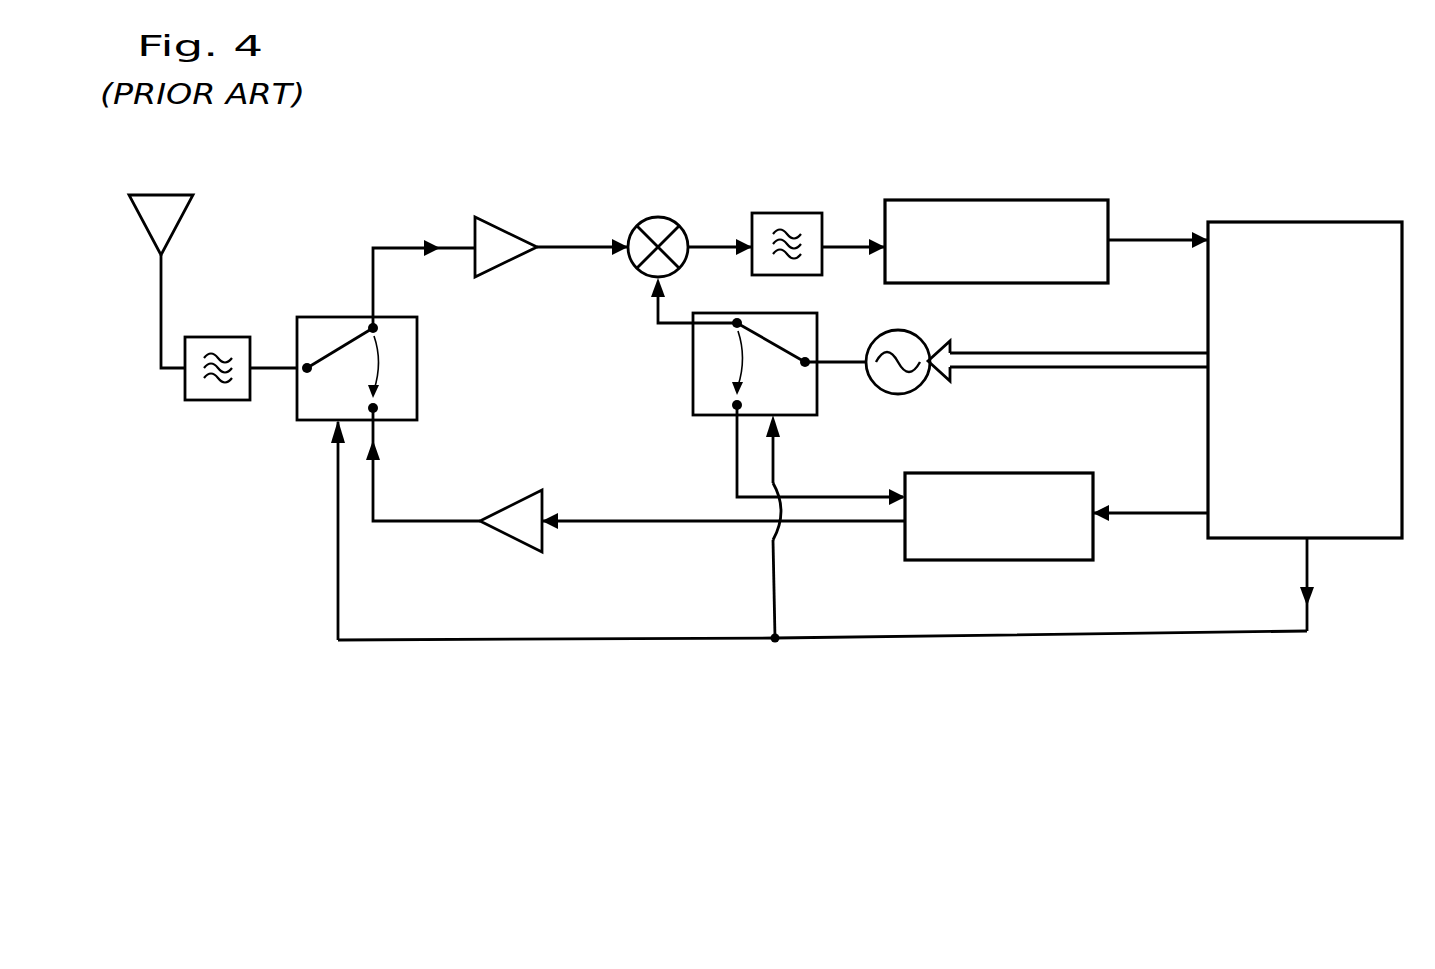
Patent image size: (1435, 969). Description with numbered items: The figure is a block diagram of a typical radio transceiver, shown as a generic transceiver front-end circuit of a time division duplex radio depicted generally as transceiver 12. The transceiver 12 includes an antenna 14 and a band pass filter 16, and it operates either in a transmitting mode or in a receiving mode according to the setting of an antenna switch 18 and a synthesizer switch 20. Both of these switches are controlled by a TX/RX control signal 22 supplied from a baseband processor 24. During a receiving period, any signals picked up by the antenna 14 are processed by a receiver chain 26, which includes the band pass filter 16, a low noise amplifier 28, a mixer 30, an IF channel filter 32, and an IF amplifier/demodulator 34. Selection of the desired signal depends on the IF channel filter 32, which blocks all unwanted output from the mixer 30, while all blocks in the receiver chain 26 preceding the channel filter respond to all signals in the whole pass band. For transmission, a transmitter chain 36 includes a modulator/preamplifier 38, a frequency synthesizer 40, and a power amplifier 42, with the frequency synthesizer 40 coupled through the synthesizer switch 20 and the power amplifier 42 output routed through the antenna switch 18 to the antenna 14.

The transceiver 12 is at (243, 628).
The antenna 14 is at (156, 196).
The band pass filter 16 is at (253, 356).
The antenna switch 18 is at (417, 358).
The synthesizer switch 20 is at (715, 418).
The TX/RX control signal 22 is at (1255, 633).
The baseband processor 24 is at (1402, 262).
The receiver chain 26 is at (891, 156).
The low noise amplifier 28 is at (494, 272).
The mixer 30 is at (641, 277).
The IF channel filter 32 is at (800, 276).
The IF amplifier/demodulator 34 is at (1062, 284).
The transmitter chain 36 is at (895, 588).
The modulator/preamplifier 38 is at (1040, 561).
The frequency synthesizer 40 is at (890, 332).
The power amplifier 42 is at (511, 502).